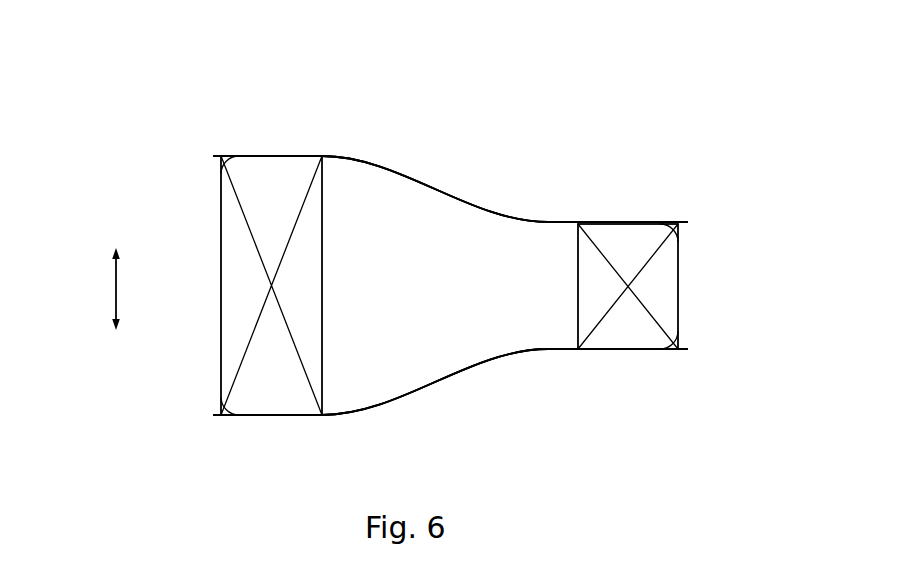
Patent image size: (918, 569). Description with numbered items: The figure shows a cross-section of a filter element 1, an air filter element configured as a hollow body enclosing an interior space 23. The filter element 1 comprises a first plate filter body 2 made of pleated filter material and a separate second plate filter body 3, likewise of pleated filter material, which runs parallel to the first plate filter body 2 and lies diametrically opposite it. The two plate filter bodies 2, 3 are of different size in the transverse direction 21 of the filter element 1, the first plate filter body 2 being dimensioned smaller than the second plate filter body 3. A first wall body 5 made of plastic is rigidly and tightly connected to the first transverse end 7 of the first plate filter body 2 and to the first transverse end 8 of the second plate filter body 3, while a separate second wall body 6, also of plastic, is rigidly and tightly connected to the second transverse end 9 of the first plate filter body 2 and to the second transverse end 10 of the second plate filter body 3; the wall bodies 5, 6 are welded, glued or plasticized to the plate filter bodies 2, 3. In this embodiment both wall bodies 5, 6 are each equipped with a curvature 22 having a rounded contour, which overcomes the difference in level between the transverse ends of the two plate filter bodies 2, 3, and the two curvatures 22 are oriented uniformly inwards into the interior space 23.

The filter element 1 is at (714, 142).
The first plate filter body 2 is at (211, 286).
The second plate filter body 3 is at (690, 286).
The first wall body 5 is at (474, 193).
The second wall body 6 is at (467, 380).
The first transverse end of the first plate filter body 7 is at (221, 174).
The first transverse end of the second plate filter body 8 is at (678, 242).
The second transverse end of the first plate filter body 9 is at (221, 397).
The second transverse end of the second plate filter body 10 is at (678, 331).
The transverse direction 21 is at (112, 284).
The curvature 22 is at (431, 182).
The interior space 23 is at (448, 302).